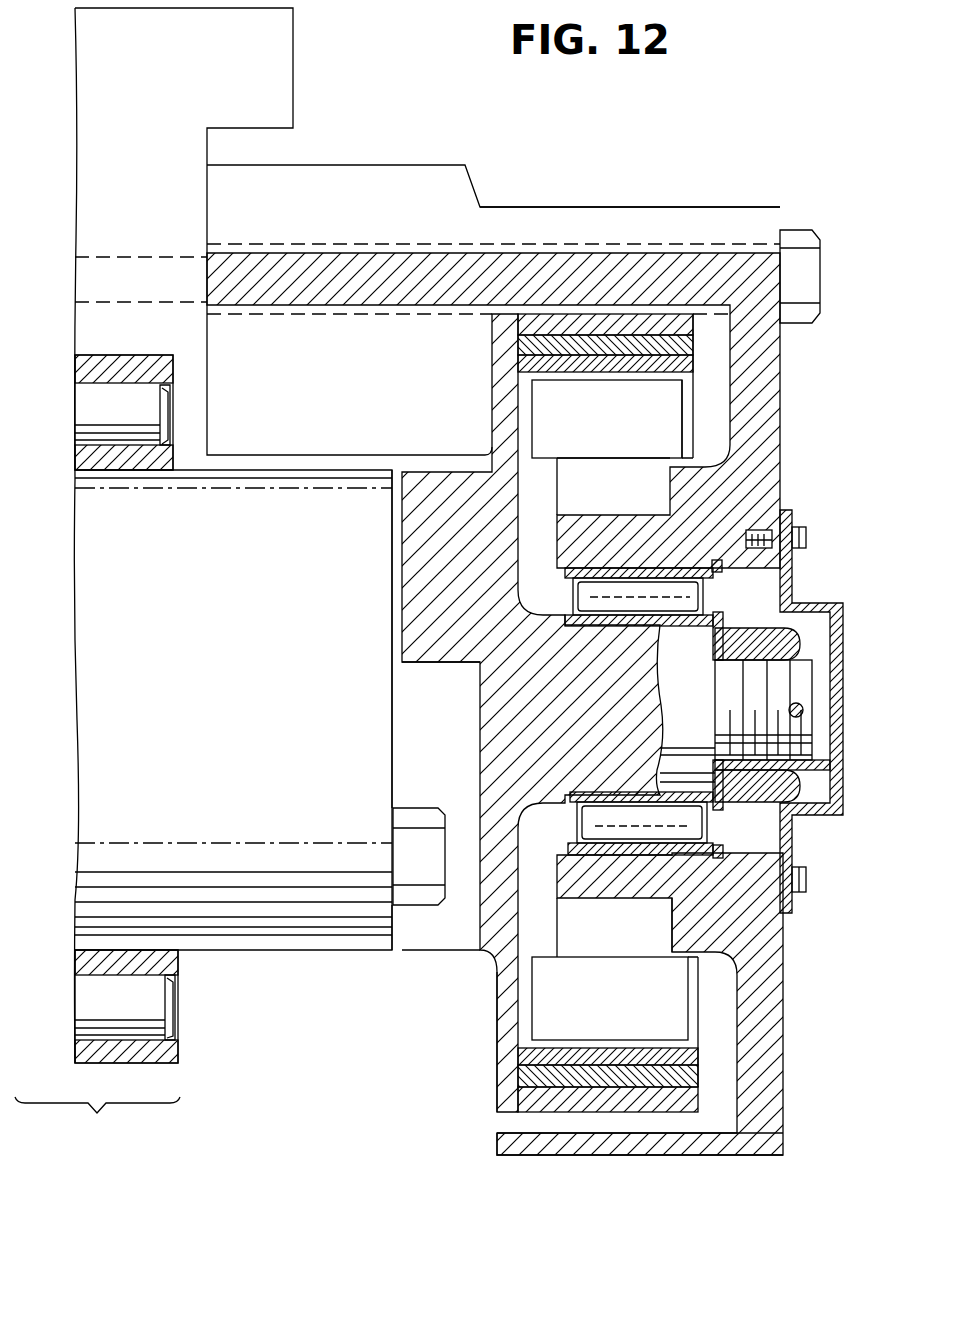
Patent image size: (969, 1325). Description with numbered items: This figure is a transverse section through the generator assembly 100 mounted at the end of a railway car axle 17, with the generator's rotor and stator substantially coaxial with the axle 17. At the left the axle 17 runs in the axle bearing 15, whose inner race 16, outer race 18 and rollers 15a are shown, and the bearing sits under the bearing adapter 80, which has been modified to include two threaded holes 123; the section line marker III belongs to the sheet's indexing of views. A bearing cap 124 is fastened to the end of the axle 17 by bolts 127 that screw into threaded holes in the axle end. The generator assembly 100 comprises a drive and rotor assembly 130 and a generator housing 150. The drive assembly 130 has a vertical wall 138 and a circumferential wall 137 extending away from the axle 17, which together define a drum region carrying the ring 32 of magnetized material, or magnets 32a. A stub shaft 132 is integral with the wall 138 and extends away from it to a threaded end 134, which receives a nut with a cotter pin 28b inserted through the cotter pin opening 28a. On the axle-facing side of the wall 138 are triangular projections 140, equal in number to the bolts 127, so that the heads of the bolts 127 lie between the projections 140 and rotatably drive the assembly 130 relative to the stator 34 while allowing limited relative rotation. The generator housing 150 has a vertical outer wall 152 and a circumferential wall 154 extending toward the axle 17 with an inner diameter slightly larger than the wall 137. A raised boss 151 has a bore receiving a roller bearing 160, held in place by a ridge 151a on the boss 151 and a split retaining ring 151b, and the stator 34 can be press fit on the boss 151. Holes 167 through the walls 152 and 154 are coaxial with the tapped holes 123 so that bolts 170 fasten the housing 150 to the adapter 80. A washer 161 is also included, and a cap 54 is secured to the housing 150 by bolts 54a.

The bearing adapter 80 is at (285, 62).
The generator assembly 100 is at (622, 203).
The holes 167 is at (697, 248).
The circumferential wall 154 is at (738, 216).
The threaded holes 123 is at (147, 277).
The axle bearing 15 is at (118, 350).
The vertical outer wall 152 is at (770, 406).
The bolts 170 is at (812, 280).
The outer race 18 is at (80, 366).
The rollers 15a is at (75, 418).
The inner race 16 is at (95, 455).
The axle 17 is at (95, 738).
The stub shaft 132 is at (617, 717).
The vertical wall 138 is at (510, 1112).
The ring of magnetized material 32 is at (522, 344).
The magnets 32a is at (525, 364).
The stator 34 is at (553, 993).
The ridge 151a is at (612, 565).
The washer 161 is at (730, 622).
The split retaining ring 151b is at (725, 567).
The roller bearing 160 is at (690, 826).
The cotter pin 28b is at (805, 716).
The cotter pin opening 28a is at (802, 708).
The threaded end 134 is at (795, 758).
The cap 54 is at (845, 806).
The bolts 54a is at (802, 536).
The projections 140 is at (440, 775).
The bolts 127 is at (413, 895).
The bearing cap 124 is at (390, 955).
The generator housing 150 is at (787, 1100).
The raised boss 151 is at (645, 900).
The drive and rotor assembly 130 is at (495, 1072).
The circumferential wall 137 is at (635, 1105).
The section indicator III is at (97, 1125).